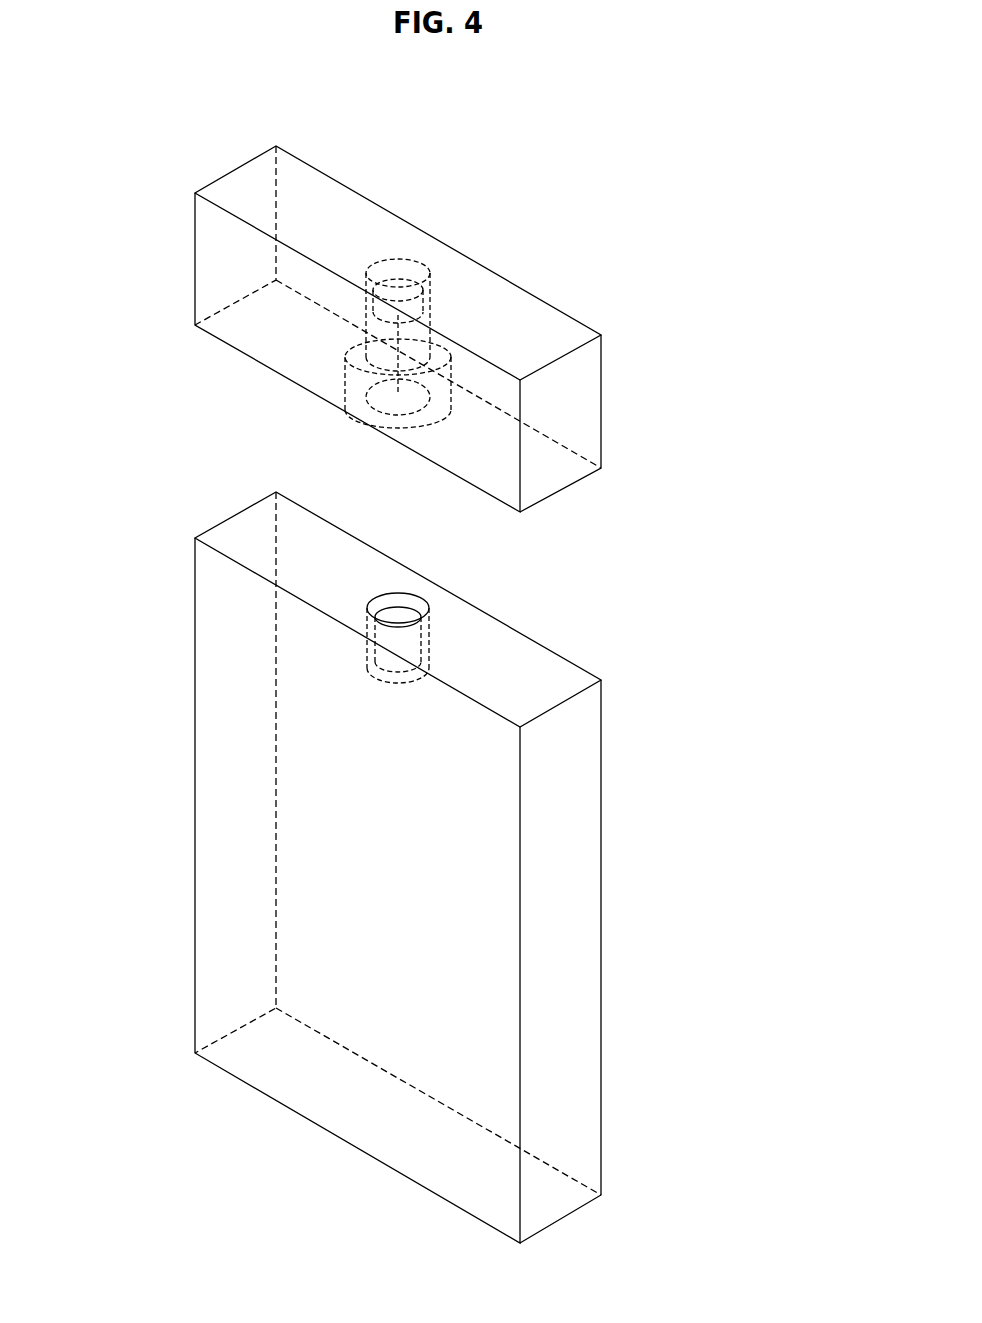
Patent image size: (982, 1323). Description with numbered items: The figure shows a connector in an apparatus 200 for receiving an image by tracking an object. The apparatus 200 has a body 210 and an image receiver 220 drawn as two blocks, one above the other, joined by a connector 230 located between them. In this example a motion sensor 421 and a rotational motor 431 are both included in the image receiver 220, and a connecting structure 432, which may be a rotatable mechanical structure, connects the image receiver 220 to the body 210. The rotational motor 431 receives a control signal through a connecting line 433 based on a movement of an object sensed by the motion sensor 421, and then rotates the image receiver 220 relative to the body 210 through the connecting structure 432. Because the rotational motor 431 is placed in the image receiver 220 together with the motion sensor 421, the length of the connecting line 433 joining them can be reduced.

The apparatus 200 is at (422, 95).
The body 210 is at (195, 797).
The image receiver 220 is at (195, 260).
The coupling structure 230 is at (718, 290).
The motion sensor 421 is at (398, 287).
The rotational motor 431 is at (440, 413).
The connecting structure 432 is at (402, 617).
The connecting line 433 is at (398, 350).